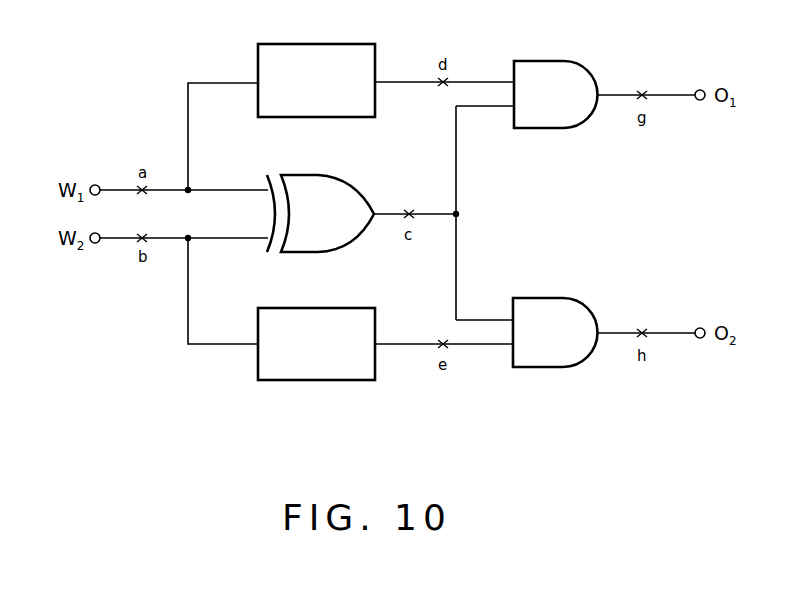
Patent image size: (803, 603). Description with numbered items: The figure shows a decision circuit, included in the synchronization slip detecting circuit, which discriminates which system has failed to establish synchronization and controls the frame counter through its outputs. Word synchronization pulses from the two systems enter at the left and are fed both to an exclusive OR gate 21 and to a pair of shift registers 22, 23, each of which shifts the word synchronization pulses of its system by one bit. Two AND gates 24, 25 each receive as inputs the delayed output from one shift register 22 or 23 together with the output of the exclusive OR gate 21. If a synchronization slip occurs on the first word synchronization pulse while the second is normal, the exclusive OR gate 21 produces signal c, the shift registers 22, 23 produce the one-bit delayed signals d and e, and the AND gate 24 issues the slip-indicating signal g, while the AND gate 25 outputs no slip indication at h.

The exclusive OR gate 21 is at (351, 185).
The shift register 22 is at (308, 44).
The shift register 23 is at (327, 380).
The AND gate 24 is at (540, 61).
The AND gate 25 is at (538, 367).